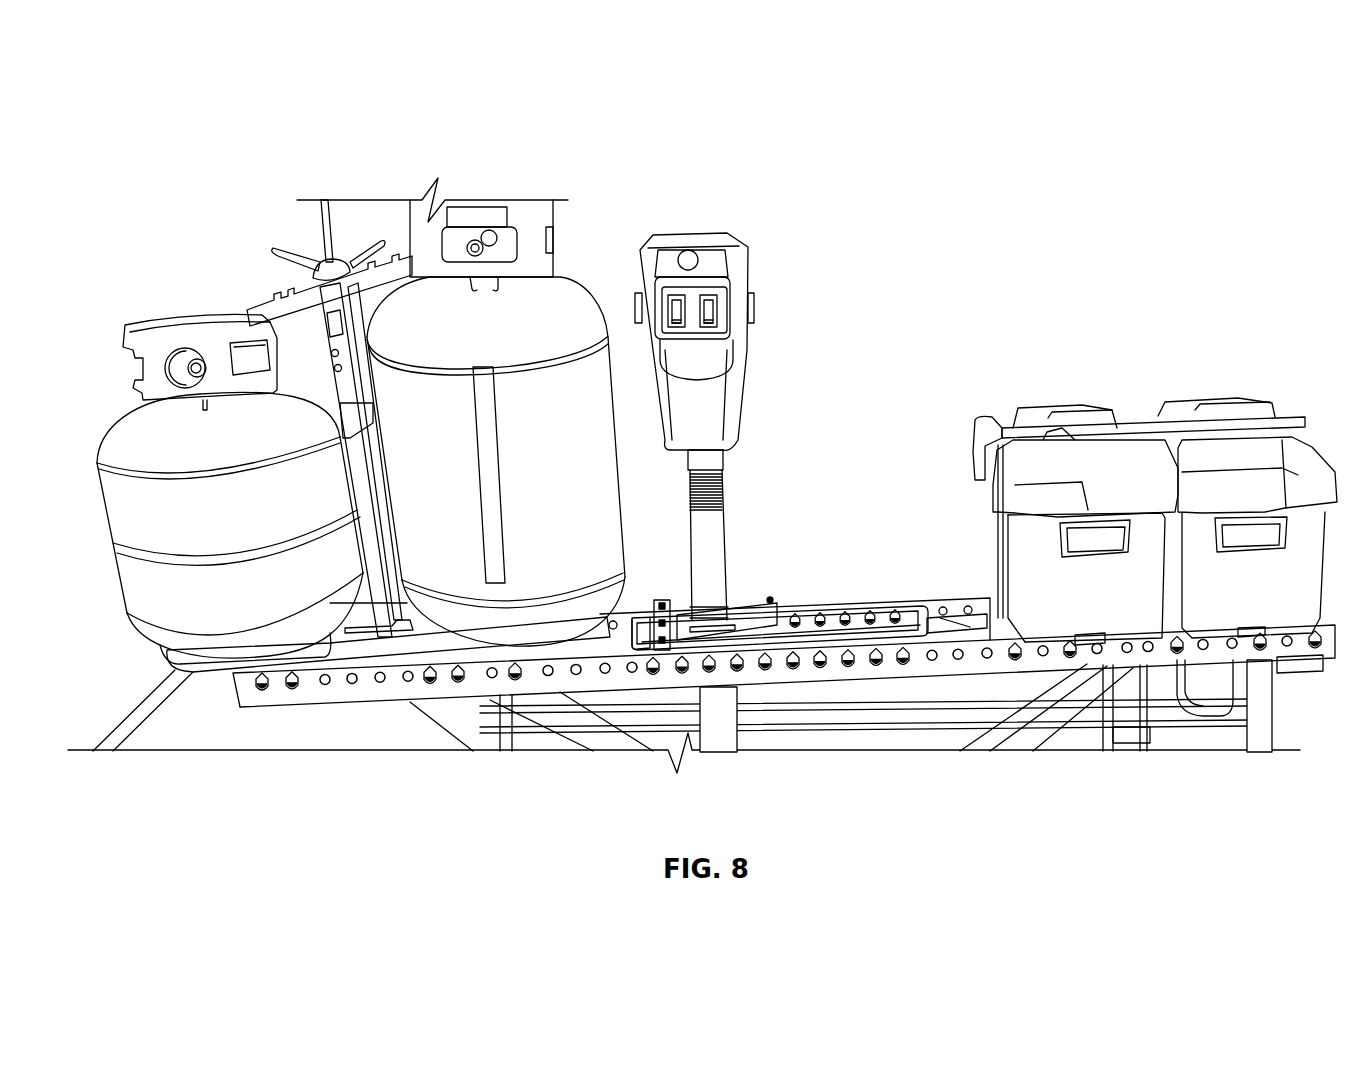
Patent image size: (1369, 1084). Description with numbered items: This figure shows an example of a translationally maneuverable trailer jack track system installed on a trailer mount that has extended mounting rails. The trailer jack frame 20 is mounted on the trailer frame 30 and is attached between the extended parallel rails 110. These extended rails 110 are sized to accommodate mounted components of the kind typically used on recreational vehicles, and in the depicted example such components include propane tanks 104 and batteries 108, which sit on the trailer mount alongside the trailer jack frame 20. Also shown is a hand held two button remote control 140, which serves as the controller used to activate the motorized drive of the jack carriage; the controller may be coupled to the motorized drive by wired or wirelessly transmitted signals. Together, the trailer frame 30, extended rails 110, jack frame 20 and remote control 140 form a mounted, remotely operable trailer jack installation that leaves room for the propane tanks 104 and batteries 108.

The trailer jack frame 20 is at (878, 603).
The trailer frame 30 is at (1080, 728).
The propane tanks 104 is at (477, 215).
The batteries 108 is at (1040, 423).
The extended parallel rails 110 is at (987, 662).
The two button remote control 140 is at (738, 233).